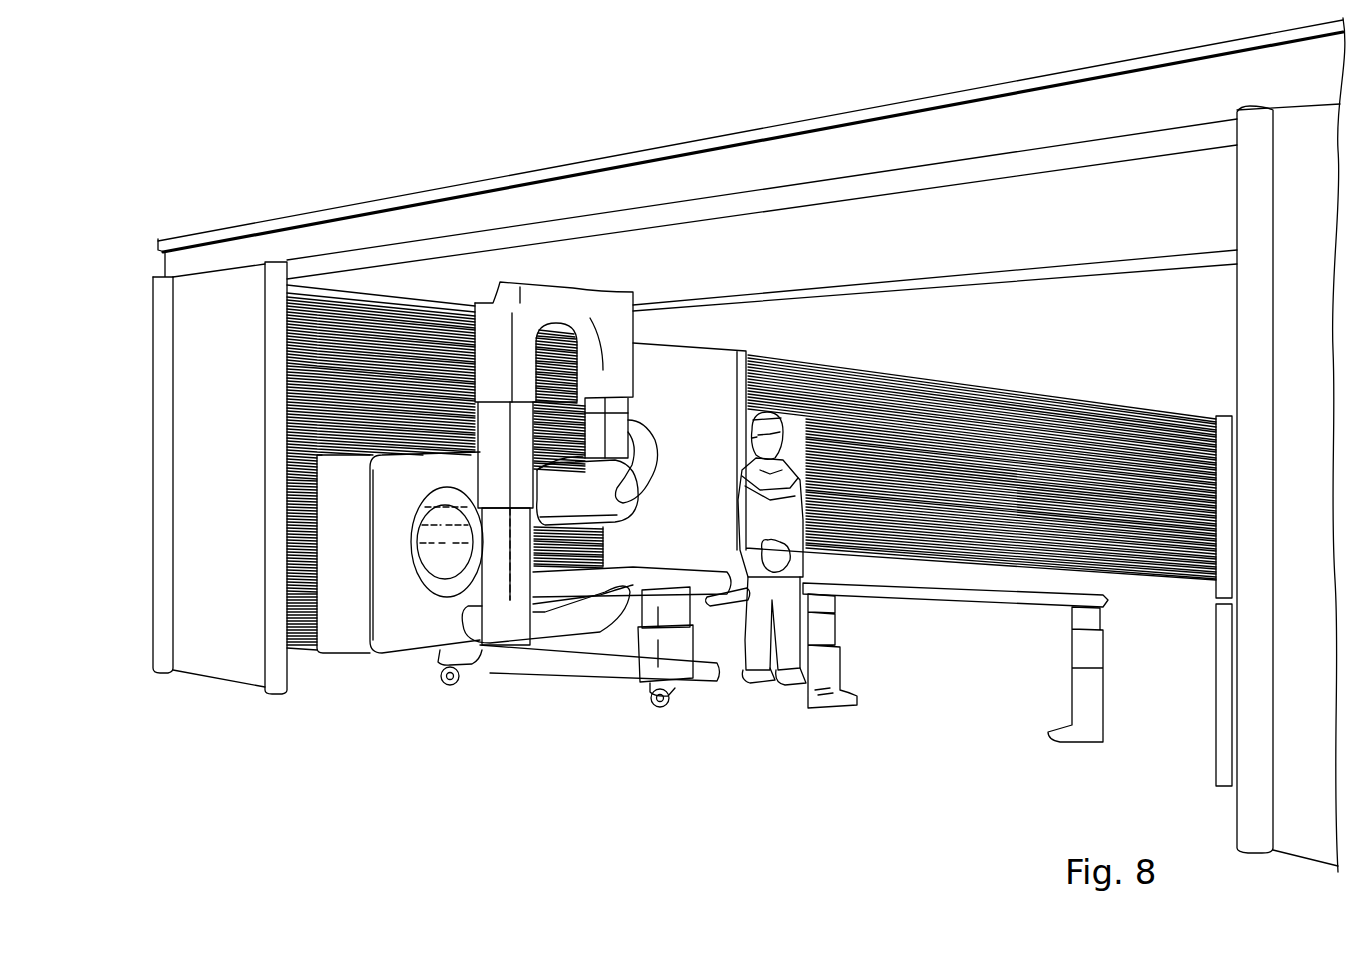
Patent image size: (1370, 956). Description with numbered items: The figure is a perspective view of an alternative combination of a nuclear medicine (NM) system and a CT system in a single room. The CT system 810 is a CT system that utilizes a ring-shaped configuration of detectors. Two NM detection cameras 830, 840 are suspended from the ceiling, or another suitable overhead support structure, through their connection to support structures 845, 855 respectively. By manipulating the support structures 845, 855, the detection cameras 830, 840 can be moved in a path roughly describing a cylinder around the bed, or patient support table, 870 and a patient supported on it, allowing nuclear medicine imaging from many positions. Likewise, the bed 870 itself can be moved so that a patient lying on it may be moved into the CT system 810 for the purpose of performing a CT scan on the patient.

The CT system 810 is at (394, 612).
The NM detection camera 830 is at (645, 500).
The NM detection camera 840 is at (625, 620).
The support structure 845 is at (512, 632).
The support structure 855 is at (635, 338).
The bed (patient support table) 870 is at (680, 660).